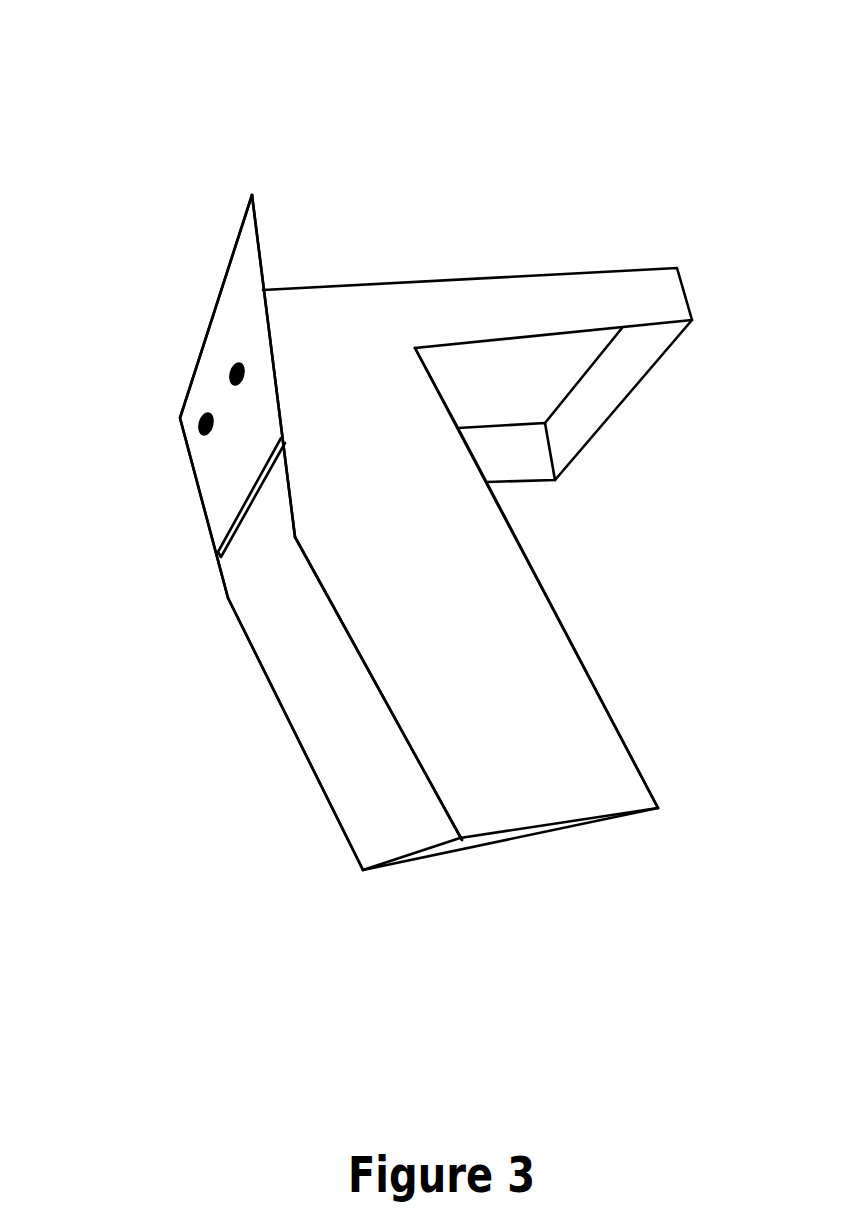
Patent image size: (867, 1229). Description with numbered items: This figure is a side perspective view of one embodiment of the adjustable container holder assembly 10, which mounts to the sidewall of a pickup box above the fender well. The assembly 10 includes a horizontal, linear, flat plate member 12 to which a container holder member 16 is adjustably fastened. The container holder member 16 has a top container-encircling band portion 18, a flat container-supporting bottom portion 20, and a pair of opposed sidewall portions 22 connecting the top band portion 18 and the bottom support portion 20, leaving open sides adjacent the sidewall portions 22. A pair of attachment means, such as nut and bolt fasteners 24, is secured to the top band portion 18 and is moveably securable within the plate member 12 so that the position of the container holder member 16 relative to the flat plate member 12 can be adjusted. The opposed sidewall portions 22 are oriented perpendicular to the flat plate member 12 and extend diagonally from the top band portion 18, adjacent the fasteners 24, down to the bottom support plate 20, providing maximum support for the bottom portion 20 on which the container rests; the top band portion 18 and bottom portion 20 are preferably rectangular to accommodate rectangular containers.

The adjustable container holder assembly 10 is at (169, 94).
The flat plate member 12 is at (232, 315).
The container holder member 16 is at (708, 578).
The top container-encircling band portion 18 is at (333, 320).
The flat container-supporting bottom portion 20 is at (448, 850).
The opposed sidewall portions 22 is at (328, 732).
The nut and bolt fasteners 24 is at (229, 376).